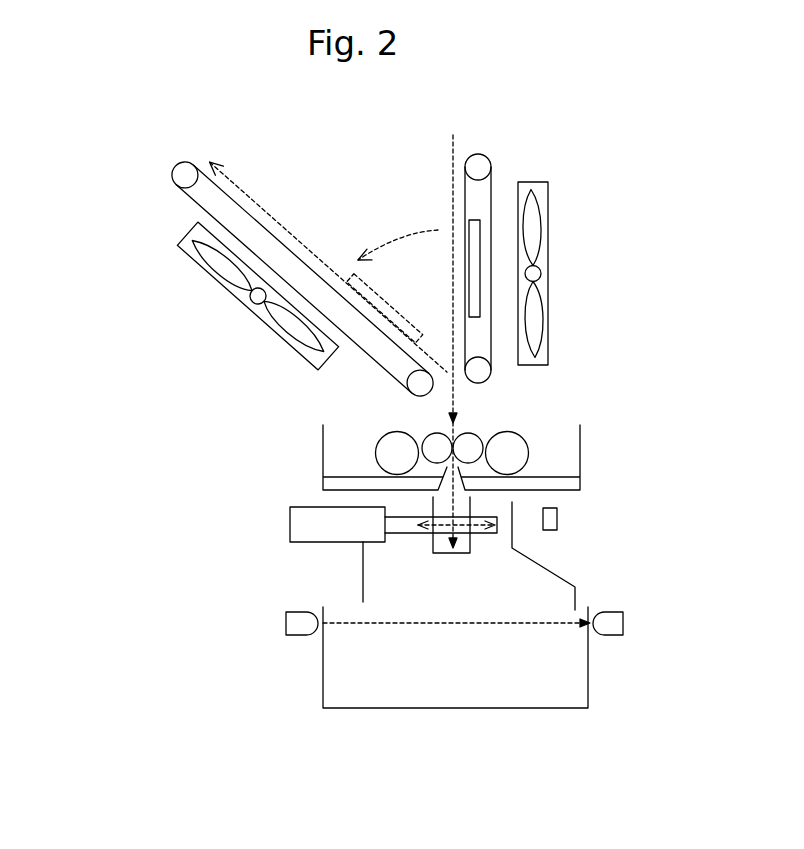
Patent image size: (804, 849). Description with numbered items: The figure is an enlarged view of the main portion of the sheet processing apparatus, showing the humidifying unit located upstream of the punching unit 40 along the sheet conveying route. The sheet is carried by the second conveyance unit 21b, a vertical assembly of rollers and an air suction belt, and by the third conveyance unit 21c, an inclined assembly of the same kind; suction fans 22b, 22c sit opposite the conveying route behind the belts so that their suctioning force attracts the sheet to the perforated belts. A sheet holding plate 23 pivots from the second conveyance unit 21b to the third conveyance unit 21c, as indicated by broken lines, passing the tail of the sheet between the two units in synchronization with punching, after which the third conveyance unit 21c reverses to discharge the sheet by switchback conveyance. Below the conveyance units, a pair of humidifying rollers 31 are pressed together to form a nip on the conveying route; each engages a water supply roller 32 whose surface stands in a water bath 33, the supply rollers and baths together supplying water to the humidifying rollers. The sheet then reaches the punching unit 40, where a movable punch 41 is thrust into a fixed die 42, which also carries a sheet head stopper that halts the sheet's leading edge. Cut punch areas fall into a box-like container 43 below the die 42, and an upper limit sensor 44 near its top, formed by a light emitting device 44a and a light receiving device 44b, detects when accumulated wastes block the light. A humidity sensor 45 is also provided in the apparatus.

The second conveyance unit 21b is at (492, 173).
The third conveyance unit 21c is at (185, 188).
The suction fan 22b is at (548, 267).
The suction fan 22c is at (223, 290).
The sheet holding plate 23 is at (480, 297).
The humidifying rollers 31 is at (413, 435).
The water supply rollers 32 is at (375, 452).
The water baths 33 is at (322, 477).
The punching unit 40 is at (197, 548).
The punch 41 is at (407, 535).
The die 42 is at (470, 557).
The container 43 is at (427, 708).
The upper limit sensor 44 is at (268, 628).
The light emitting device 44a is at (290, 637).
The light receiving device 44b is at (623, 617).
The humidity sensor 45 is at (560, 513).